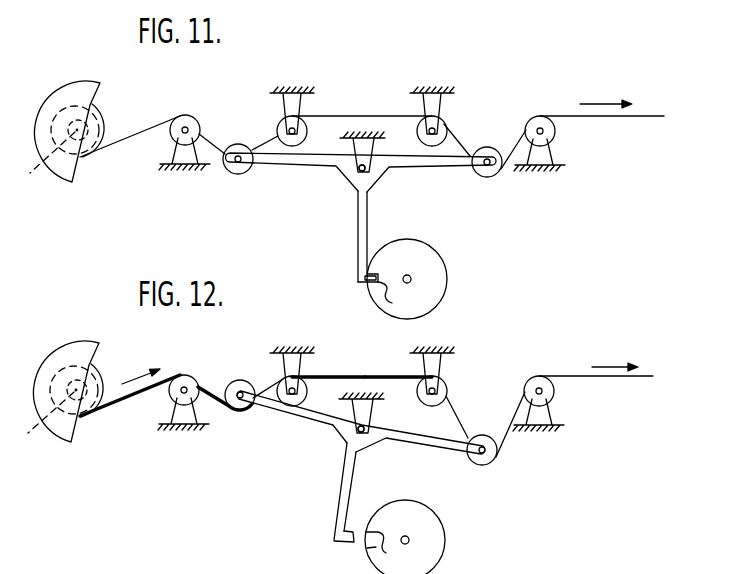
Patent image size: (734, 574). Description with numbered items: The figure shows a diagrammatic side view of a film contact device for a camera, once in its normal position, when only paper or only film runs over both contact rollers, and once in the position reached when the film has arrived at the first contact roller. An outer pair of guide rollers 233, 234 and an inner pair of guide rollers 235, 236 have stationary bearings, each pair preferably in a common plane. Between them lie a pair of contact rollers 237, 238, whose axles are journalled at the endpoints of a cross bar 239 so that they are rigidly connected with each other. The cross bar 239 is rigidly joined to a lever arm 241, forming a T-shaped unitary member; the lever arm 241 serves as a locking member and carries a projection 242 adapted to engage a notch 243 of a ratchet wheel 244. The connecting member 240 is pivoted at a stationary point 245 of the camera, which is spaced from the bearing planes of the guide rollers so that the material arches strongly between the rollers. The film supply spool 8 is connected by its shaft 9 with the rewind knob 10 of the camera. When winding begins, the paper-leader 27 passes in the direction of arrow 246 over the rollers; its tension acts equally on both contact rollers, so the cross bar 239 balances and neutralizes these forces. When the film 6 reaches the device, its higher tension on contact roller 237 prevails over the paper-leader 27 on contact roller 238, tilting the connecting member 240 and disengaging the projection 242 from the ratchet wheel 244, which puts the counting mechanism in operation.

In FIG. 12, the film 6 is at (327, 376).
In FIG. 11, the film supply spool 8 is at (100, 117).
In FIG. 12, the film supply spool 8 is at (97, 378).
In FIG. 11, the shaft 9 is at (43, 161).
In FIG. 12, the shaft 9 is at (44, 419).
In FIG. 11, the rewind knob 10 is at (53, 95).
In FIG. 12, the rewind knob 10 is at (53, 355).
In FIG. 11, the paper-leader 27 is at (340, 115).
In FIG. 12, the paper-leader 27 is at (370, 376).
In FIG. 11, the guide roller 233 is at (182, 118).
In FIG. 12, the guide roller 233 is at (168, 393).
In FIG. 11, the guide roller 234 is at (553, 134).
In FIG. 12, the guide roller 234 is at (553, 392).
In FIG. 11, the guide roller 235 is at (305, 128).
In FIG. 12, the guide roller 235 is at (250, 407).
In FIG. 11, the guide roller 236 is at (443, 127).
In FIG. 12, the guide roller 236 is at (440, 395).
In FIG. 11, the contact roller 237 is at (238, 146).
In FIG. 12, the contact roller 237 is at (238, 380).
In FIG. 11, the contact roller 238 is at (488, 178).
In FIG. 12, the contact roller 238 is at (483, 461).
In FIG. 11, the cross bar 239 is at (303, 162).
In FIG. 12, the cross bar 239 is at (425, 442).
In FIG. 11, the connecting member 240 is at (352, 177).
In FIG. 12, the connecting member 240 is at (348, 435).
In FIG. 11, the lever arm 241 is at (358, 222).
In FIG. 12, the lever arm 241 is at (345, 487).
In FIG. 11, the projection 242 is at (367, 281).
In FIG. 12, the projection 242 is at (348, 543).
In FIG. 11, the notch 243 is at (399, 300).
In FIG. 12, the notch 243 is at (391, 553).
In FIG. 11, the ratchet wheel 244 is at (437, 277).
In FIG. 12, the ratchet wheel 244 is at (437, 550).
In FIG. 11, the stationary point 245 is at (368, 171).
In FIG. 12, the stationary point 245 is at (368, 441).
In FIG. 11, the arrow 246 is at (600, 103).